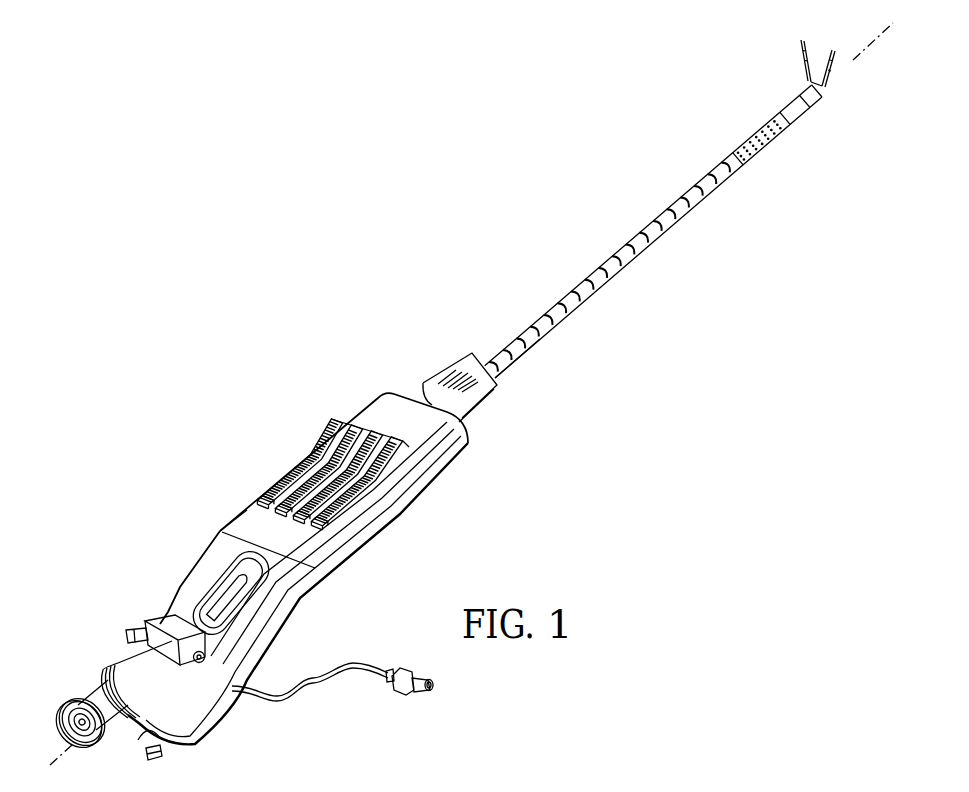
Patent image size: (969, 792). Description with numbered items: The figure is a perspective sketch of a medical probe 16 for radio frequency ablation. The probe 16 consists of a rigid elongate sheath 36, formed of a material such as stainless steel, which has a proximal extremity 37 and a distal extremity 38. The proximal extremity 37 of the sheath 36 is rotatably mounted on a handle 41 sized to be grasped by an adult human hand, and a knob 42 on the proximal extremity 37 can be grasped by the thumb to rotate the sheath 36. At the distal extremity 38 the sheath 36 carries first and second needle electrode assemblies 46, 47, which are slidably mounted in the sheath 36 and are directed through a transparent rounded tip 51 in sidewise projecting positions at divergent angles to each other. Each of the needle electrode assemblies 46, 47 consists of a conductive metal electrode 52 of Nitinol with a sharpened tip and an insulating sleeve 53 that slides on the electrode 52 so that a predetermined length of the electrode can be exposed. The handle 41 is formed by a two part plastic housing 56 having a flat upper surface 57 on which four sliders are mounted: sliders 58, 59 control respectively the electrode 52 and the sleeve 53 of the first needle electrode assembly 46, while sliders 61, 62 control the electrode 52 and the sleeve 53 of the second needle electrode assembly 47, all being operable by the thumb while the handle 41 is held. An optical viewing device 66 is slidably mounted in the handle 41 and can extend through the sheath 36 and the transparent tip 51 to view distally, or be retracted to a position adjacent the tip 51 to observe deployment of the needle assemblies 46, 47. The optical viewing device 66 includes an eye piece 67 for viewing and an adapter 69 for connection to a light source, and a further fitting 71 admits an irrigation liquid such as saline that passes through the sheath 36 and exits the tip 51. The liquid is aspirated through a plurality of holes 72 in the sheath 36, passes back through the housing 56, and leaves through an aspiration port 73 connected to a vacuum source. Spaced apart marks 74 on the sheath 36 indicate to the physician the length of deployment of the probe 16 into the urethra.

The probe 16 is at (537, 266).
The rigid elongate sheath 36 is at (630, 236).
The proximal extremity 37 is at (510, 343).
The distal extremity 38 is at (798, 99).
The handle 41 is at (373, 395).
The knob 42 is at (443, 380).
The first needle electrode assembly 46 is at (786, 67).
The second needle electrode assembly 47 is at (836, 72).
The transparent rounded tip 51 is at (823, 97).
The conductive metal electrode 52 is at (808, 45).
The sleeve 53 is at (803, 62).
The housing 56 is at (362, 541).
The flat upper surface 57 is at (235, 517).
The slider 58 is at (386, 397).
The slider 59 is at (255, 510).
The slider 61 is at (393, 430).
The slider 62 is at (322, 540).
The optical viewing device 66 is at (100, 661).
The eye piece 67 is at (60, 714).
The adapter 69 is at (127, 633).
The fitting 71 is at (232, 707).
The holes 72 is at (758, 147).
The aspiration port 73 is at (162, 756).
The marks 74 is at (618, 268).